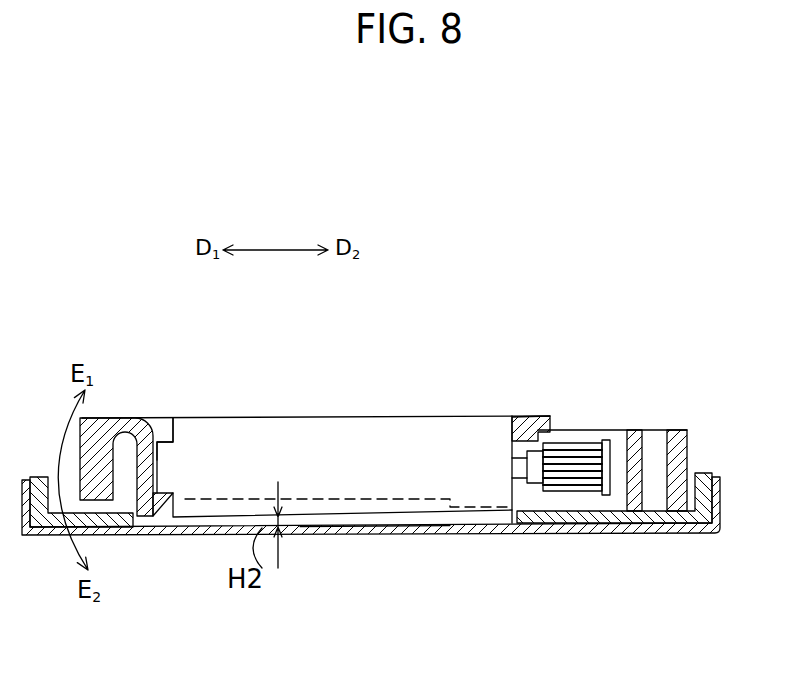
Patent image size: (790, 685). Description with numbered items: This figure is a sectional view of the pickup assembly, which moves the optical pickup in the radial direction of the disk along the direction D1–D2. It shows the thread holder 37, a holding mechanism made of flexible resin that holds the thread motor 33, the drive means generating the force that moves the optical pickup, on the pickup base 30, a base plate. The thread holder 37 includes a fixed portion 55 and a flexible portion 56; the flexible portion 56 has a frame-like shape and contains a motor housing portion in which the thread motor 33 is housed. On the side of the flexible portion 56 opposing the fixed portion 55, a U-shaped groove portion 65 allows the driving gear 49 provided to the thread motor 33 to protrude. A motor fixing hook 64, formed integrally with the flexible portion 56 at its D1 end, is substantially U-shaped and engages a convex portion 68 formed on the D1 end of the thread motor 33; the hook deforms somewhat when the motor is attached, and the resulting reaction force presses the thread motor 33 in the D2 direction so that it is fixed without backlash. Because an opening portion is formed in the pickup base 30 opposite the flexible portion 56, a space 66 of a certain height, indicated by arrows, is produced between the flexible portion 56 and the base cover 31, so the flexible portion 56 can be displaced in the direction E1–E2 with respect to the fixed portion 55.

The pickup base 30 is at (598, 530).
The base cover 31 is at (667, 533).
The thread motor 33 is at (329, 430).
The thread holder 37 is at (493, 258).
The driving gear 49 is at (572, 456).
The fixed portion 55 is at (683, 451).
The flexible portion 56 is at (122, 400).
The motor fixing hook 64 is at (151, 528).
The U-shaped groove portion 65 is at (527, 416).
The space 66 is at (372, 533).
The convex portion 68 is at (162, 417).